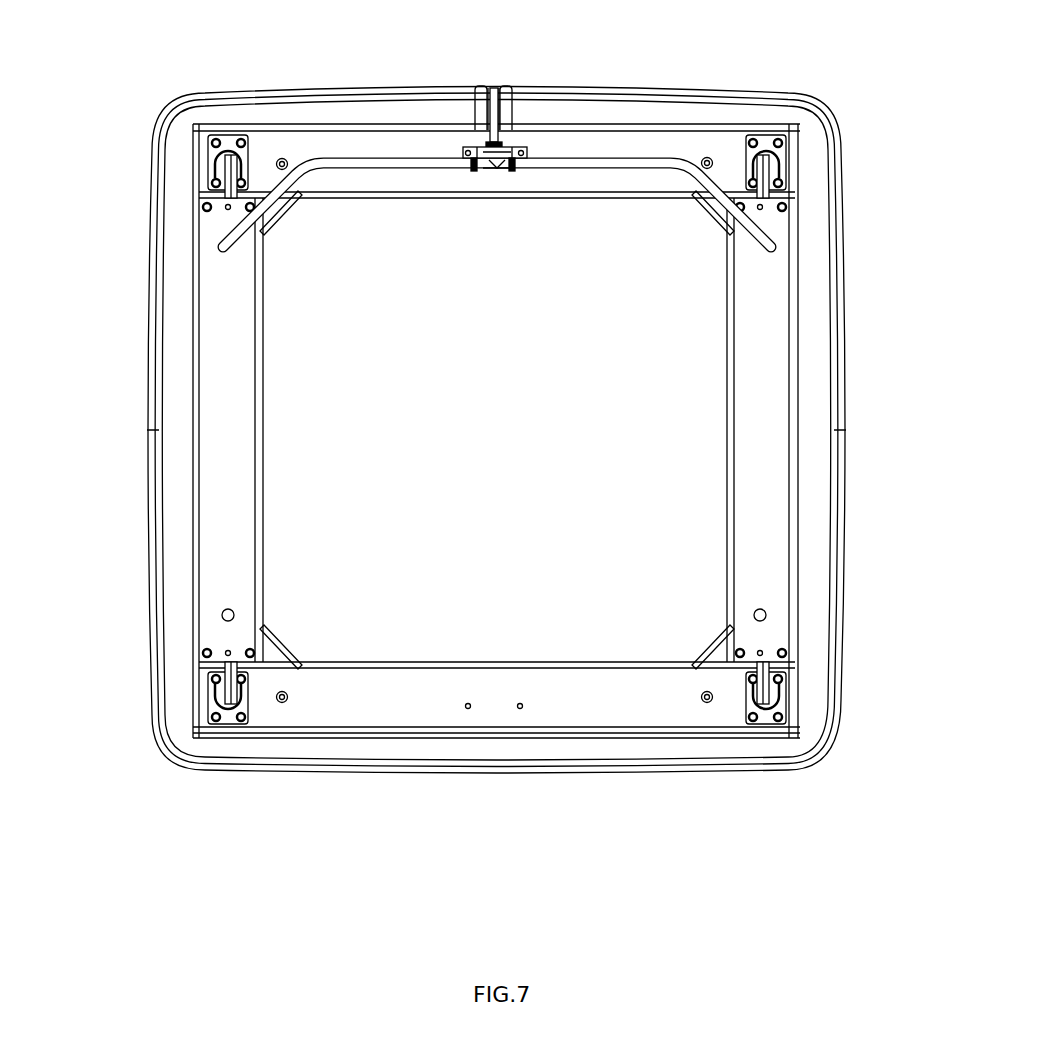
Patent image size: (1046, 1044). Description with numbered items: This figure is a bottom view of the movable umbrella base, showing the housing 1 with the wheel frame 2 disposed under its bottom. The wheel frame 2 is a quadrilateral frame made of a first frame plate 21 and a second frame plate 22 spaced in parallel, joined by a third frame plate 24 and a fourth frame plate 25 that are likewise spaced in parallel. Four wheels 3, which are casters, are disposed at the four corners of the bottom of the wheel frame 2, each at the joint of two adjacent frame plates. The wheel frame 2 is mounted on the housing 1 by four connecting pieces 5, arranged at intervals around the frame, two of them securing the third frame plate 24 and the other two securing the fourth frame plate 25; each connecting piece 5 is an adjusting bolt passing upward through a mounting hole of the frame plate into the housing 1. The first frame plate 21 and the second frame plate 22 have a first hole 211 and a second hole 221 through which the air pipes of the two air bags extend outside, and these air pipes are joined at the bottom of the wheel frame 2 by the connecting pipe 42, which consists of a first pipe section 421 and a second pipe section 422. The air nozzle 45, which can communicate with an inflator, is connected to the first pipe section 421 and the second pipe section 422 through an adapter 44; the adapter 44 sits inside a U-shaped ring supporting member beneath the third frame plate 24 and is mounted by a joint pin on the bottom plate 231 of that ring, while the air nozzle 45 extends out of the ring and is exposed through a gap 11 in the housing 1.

The housing 1 is at (815, 368).
The wheel frame 2 is at (477, 443).
The wheels 3 is at (224, 170).
The connecting pieces 5 is at (708, 156).
The gap 11 is at (487, 84).
The first frame plate 21 is at (222, 512).
The second frame plate 22 is at (762, 543).
The third frame plate 24 is at (337, 147).
The fourth frame plate 25 is at (507, 705).
The connecting pipe 42 is at (497, 276).
The adapter 44 is at (466, 150).
The air nozzle 45 is at (498, 108).
The first hole 211 is at (225, 250).
The second hole 221 is at (763, 247).
The bottom plate 231 is at (527, 152).
The first pipe section 421 is at (323, 170).
The second pipe section 422 is at (552, 165).